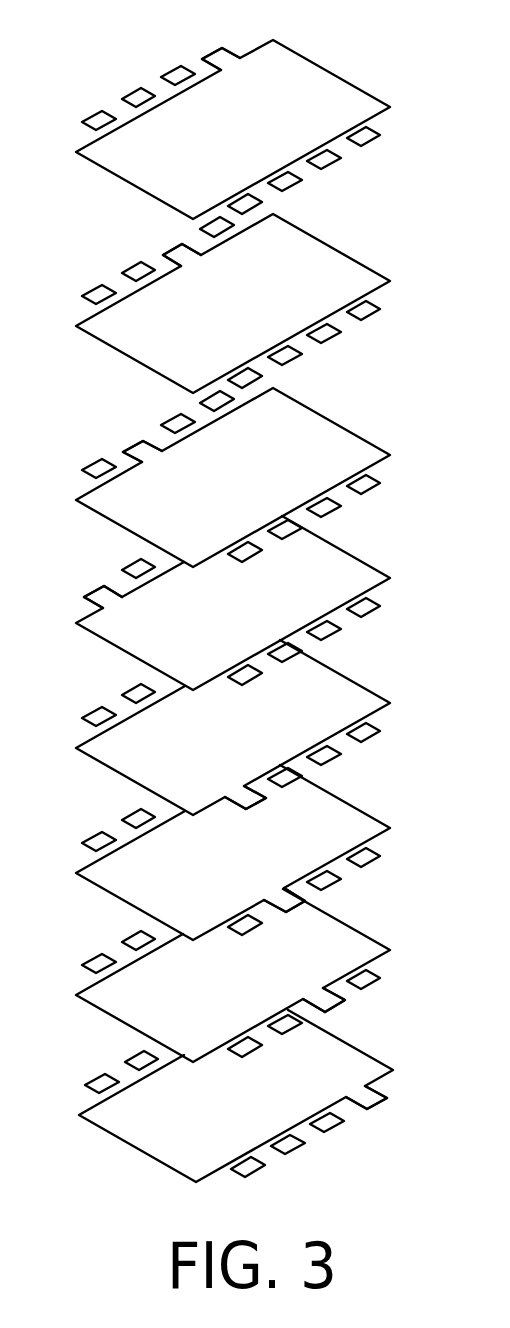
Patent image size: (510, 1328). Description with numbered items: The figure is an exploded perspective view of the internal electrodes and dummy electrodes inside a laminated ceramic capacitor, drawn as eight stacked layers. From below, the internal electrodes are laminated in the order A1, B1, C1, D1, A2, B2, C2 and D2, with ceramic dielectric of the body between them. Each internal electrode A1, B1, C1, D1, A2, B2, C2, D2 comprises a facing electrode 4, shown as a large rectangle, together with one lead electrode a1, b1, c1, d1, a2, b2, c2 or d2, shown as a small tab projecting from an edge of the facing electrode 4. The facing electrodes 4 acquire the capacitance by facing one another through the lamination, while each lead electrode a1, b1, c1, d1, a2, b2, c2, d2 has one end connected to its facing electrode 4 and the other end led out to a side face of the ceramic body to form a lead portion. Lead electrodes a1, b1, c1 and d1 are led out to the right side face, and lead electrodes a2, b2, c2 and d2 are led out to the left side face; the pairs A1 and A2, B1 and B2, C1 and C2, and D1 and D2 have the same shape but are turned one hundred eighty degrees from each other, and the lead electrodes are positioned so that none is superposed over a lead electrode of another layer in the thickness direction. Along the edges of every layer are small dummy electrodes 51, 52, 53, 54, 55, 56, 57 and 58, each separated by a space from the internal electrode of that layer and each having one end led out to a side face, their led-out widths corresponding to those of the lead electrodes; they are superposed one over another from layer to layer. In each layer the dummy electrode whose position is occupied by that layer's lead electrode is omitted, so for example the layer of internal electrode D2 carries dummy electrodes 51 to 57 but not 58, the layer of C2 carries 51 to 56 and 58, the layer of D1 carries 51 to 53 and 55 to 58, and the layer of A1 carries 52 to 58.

The facing electrode 4 is at (243, 611).
The dummy electrode 51 is at (378, 136).
The dummy electrode 52 is at (330, 156).
The dummy electrode 53 is at (293, 180).
The dummy electrode 54 is at (253, 203).
The dummy electrode 55 is at (97, 122).
The dummy electrode 56 is at (135, 101).
The dummy electrode 57 is at (174, 77).
The dummy electrode 58 is at (208, 229).
The lead electrode a1 is at (387, 1103).
The lead electrode b1 is at (347, 1001).
The lead electrode c1 is at (308, 903).
The lead electrode d1 is at (266, 800).
The lead electrode a2 is at (95, 593).
The lead electrode b2 is at (131, 448).
The lead electrode c2 is at (167, 246).
The lead electrode d2 is at (213, 52).
The internal electrode A1 is at (367, 1052).
The internal electrode B1 is at (388, 943).
The internal electrode C1 is at (380, 816).
The internal electrode D1 is at (355, 678).
The internal electrode A2 is at (353, 553).
The internal electrode B2 is at (355, 425).
The internal electrode C2 is at (355, 250).
The internal electrode D2 is at (353, 77).